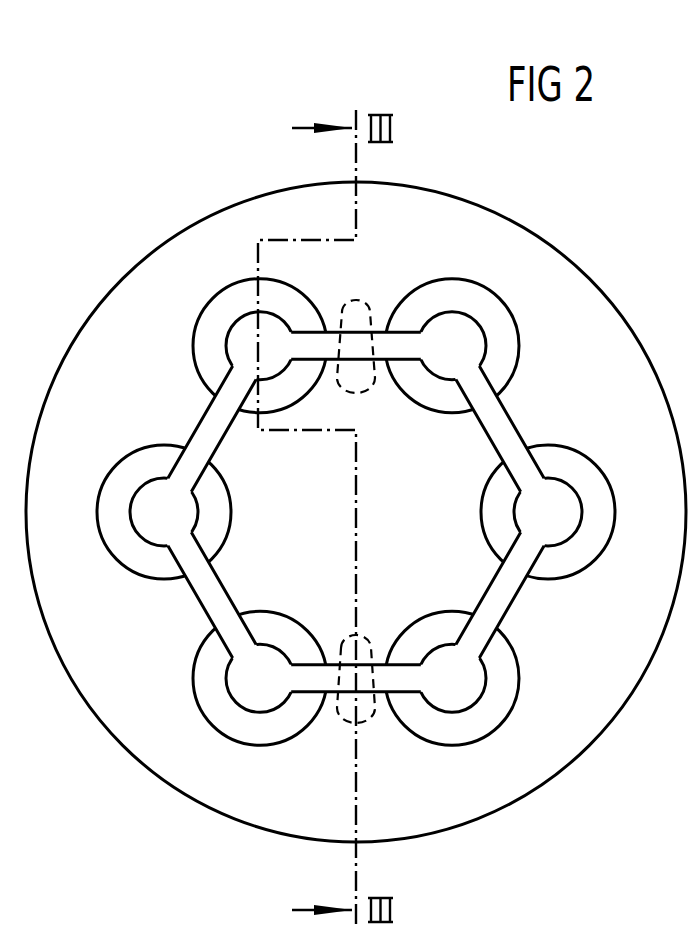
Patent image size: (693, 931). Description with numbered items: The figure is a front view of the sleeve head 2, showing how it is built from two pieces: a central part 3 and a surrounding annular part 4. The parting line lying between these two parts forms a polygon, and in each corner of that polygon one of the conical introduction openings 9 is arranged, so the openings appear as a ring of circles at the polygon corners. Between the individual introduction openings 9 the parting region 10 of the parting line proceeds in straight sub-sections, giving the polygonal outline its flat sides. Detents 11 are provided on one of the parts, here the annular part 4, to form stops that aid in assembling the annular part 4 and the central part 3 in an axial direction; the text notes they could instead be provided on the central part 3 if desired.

The sleeve head 2 is at (118, 258).
The central part 3 is at (347, 512).
The annular part 4 is at (356, 529).
The conical introduction openings 9 is at (157, 505).
The parting region 10 is at (197, 428).
The detents 11 is at (360, 300).